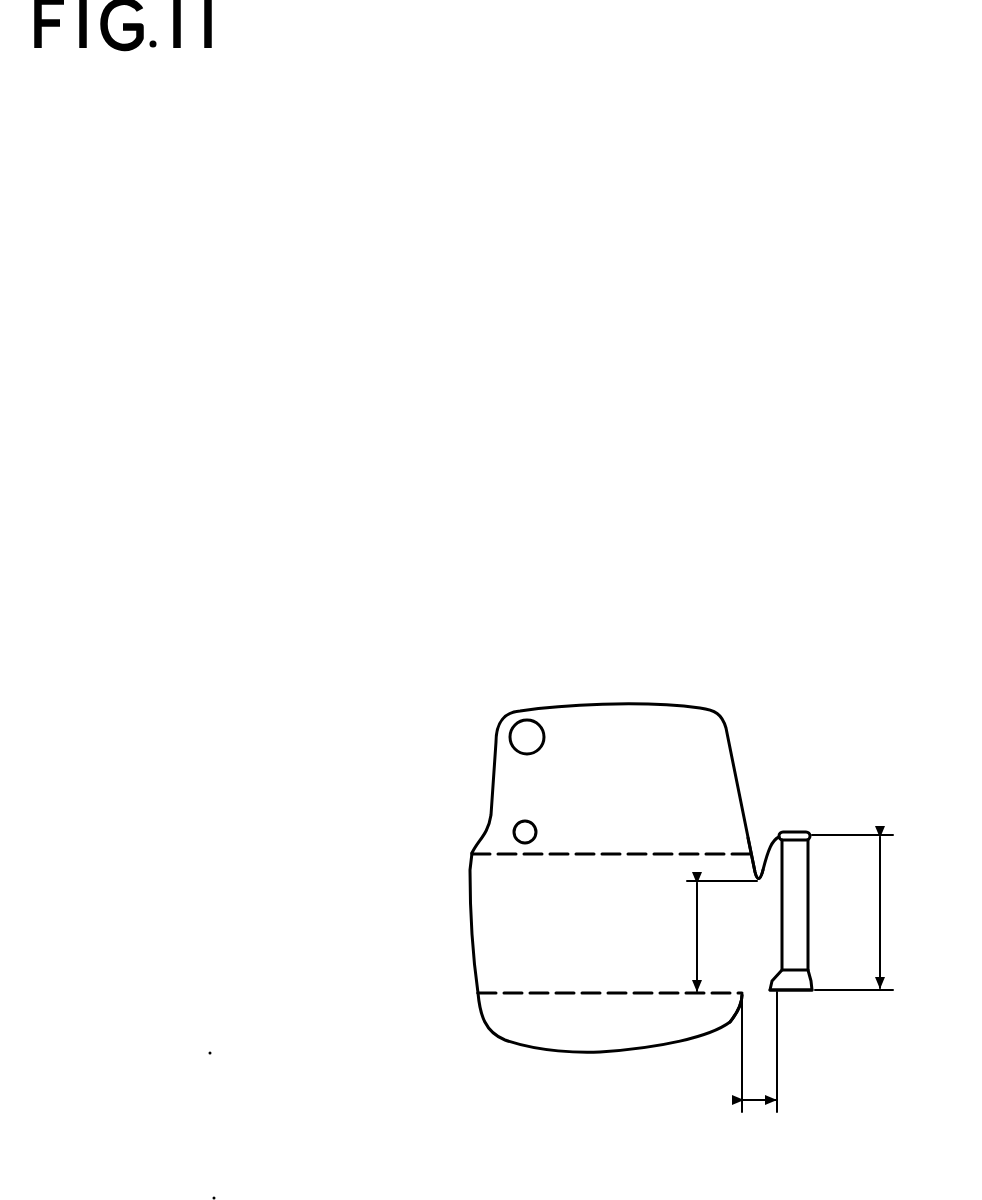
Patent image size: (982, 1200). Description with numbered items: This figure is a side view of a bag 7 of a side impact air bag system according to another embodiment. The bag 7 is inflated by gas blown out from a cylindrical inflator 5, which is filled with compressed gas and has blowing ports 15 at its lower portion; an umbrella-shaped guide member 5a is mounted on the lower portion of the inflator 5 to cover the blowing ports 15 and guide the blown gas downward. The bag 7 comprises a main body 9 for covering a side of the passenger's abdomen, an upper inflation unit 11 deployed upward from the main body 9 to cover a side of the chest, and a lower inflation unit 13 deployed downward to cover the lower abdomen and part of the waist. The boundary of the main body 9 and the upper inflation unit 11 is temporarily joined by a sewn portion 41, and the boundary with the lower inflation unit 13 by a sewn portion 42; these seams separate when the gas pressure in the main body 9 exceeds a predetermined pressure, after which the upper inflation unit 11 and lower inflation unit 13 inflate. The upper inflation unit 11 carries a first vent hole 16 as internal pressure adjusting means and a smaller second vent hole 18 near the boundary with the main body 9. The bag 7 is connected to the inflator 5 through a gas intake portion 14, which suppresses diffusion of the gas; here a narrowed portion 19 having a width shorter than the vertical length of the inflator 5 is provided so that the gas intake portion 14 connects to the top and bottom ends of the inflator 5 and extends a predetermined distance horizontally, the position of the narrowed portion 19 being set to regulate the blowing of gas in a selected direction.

The inflator 5 is at (796, 850).
The guide member 5a is at (810, 977).
The bag 7 is at (437, 953).
The main body 9 is at (498, 885).
The upper inflation unit 11 is at (608, 716).
The lower inflation unit 13 is at (594, 1037).
The gas intake portion 14 is at (765, 995).
The blowing ports 15 is at (810, 997).
The first vent hole 16 is at (520, 730).
The second vent hole 18 is at (517, 833).
The narrowed portion 19 is at (755, 870).
The sewn portion 41 is at (650, 855).
The sewn portion 42 is at (538, 997).